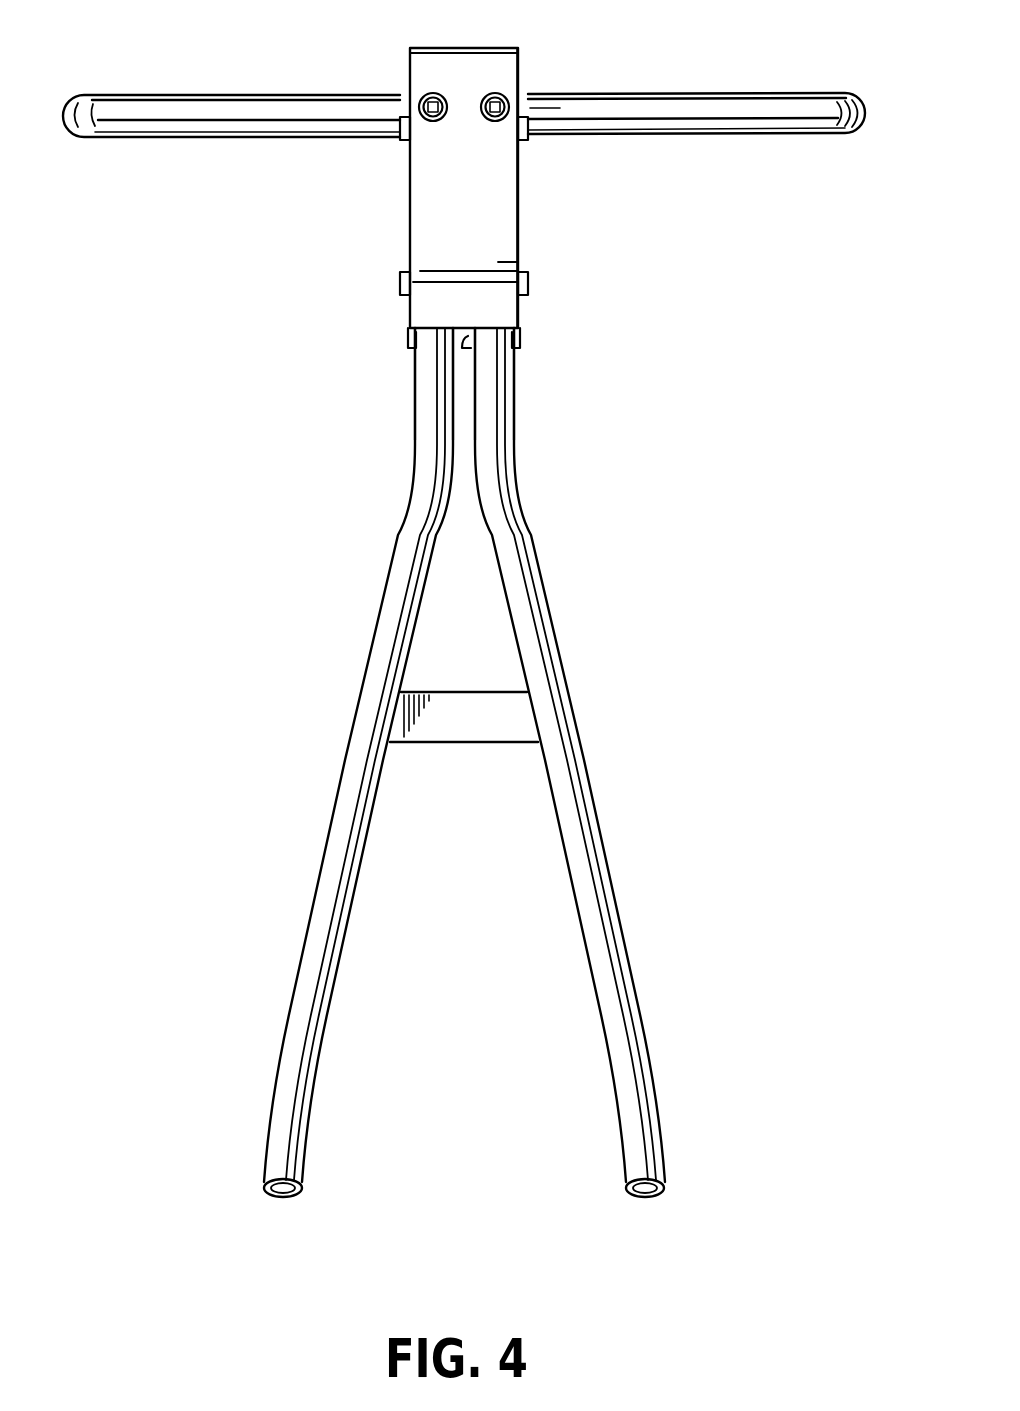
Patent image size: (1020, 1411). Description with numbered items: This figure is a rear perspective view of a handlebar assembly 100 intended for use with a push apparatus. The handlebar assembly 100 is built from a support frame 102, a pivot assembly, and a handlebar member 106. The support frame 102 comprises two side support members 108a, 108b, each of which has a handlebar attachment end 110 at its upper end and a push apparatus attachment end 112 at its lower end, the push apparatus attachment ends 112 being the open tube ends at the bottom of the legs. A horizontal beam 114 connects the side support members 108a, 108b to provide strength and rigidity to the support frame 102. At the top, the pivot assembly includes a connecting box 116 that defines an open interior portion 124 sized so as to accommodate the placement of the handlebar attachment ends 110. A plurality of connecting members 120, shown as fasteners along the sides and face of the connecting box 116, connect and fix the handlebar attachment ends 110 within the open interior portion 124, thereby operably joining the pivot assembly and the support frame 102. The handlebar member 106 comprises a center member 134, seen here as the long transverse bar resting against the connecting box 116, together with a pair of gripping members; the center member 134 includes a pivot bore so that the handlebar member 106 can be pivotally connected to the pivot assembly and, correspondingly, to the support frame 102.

The handlebar assembly 100 is at (258, 664).
The support frame 102 is at (577, 733).
The handlebar member 106 is at (258, 97).
The side support member 108a is at (622, 930).
The side support member 108b is at (314, 888).
The handlebar attachment end 110 is at (505, 343).
The push apparatus attachment end 112 is at (282, 1198).
The horizontal beam 114 is at (455, 744).
The connecting box 116 is at (423, 193).
The connecting members 120 is at (423, 102).
The open interior portion 124 is at (467, 347).
The center member 134 is at (538, 110).